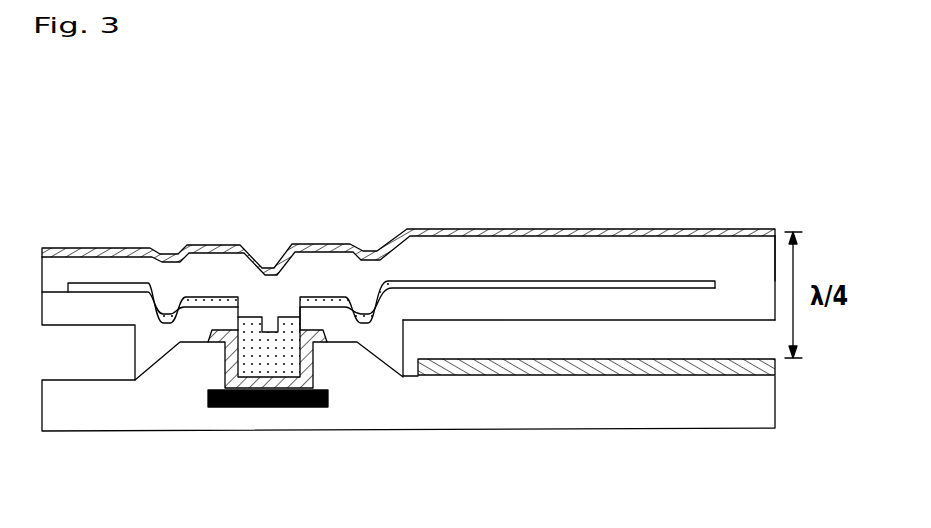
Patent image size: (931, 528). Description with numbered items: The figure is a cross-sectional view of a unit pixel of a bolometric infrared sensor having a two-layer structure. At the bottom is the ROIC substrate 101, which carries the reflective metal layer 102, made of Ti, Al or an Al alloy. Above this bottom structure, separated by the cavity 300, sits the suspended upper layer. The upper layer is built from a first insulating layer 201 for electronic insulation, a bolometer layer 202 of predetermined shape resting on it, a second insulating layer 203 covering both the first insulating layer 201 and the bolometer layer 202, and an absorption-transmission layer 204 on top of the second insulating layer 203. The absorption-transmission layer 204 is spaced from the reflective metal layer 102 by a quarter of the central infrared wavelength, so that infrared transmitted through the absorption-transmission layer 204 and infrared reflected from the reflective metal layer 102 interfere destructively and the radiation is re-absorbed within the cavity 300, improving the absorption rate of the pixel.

The ROIC substrate 101 is at (408, 344).
The reflective metal layer 102 is at (725, 375).
The first insulating layer 201 is at (585, 303).
The bolometer layer 202 is at (447, 281).
The second insulating layer 203 is at (522, 258).
The absorption-transmission layer 204 is at (708, 228).
The cavity 300 is at (589, 348).